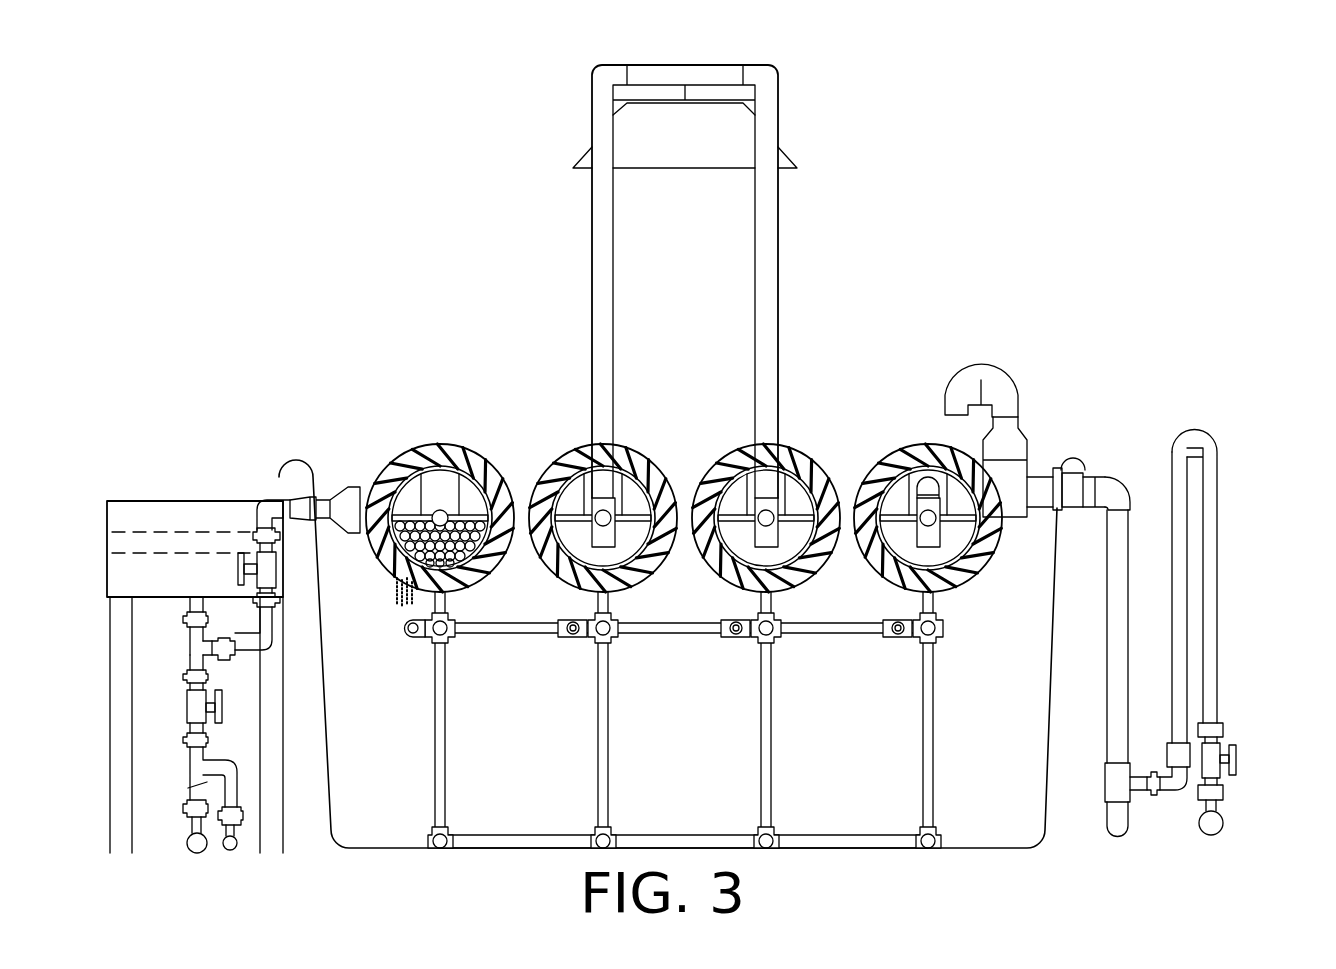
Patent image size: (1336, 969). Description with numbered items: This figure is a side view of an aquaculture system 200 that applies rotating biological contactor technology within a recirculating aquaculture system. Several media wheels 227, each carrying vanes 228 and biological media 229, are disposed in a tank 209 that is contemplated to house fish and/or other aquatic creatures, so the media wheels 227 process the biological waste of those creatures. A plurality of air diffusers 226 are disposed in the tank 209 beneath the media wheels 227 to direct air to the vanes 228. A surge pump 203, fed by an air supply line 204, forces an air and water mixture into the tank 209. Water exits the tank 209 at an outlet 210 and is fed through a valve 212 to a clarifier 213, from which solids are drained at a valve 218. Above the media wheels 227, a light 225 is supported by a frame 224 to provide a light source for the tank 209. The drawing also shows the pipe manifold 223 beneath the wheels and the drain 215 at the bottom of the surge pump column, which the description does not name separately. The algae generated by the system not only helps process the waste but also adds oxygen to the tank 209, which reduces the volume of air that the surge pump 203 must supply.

The system 200 is at (452, 345).
The surge pump 203 is at (1105, 707).
The air supply line 204 is at (1217, 548).
The tank 209 is at (1072, 455).
The outlet 210 is at (352, 486).
The valve 212 is at (240, 588).
The clarifier 213 is at (177, 500).
The drain outlet 215 is at (1105, 823).
The valve 218 is at (183, 705).
The pipe manifold 223 is at (608, 750).
The frame 224 is at (777, 288).
The light 225 is at (693, 170).
The air diffusers 226 is at (412, 636).
The media wheels 227 is at (447, 445).
The vanes 228 is at (487, 481).
The biological media 229 is at (470, 507).